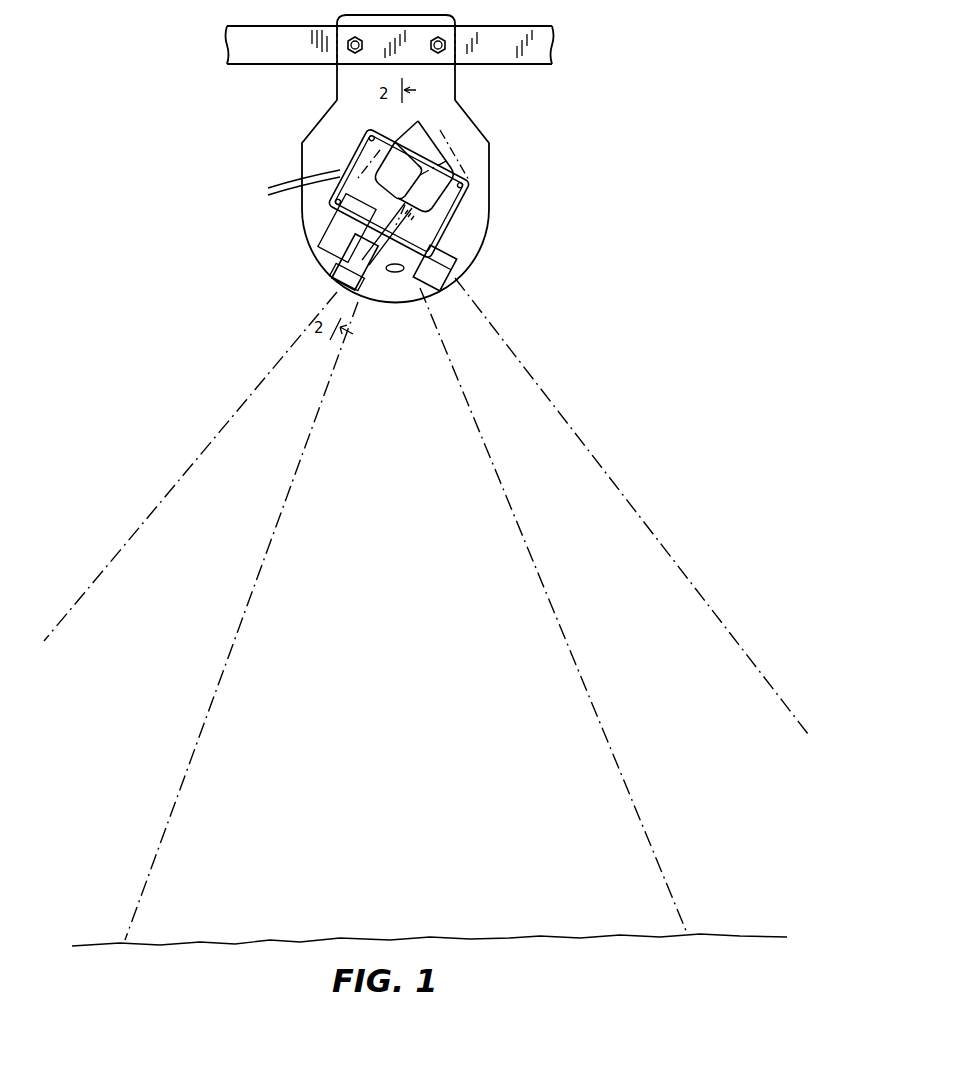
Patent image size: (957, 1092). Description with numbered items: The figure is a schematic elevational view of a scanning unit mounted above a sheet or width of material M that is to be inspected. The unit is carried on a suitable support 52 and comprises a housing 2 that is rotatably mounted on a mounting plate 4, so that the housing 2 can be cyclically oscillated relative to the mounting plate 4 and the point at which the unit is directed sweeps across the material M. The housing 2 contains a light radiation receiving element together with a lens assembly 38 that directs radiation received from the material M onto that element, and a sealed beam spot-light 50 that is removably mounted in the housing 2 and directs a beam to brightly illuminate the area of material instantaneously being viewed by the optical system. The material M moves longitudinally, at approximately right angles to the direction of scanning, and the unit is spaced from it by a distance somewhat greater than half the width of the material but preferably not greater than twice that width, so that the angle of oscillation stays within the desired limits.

The housing 2 is at (462, 208).
The mounting plate 4 is at (475, 124).
The lens assembly 38 is at (336, 265).
The sealed beam spot-light 50 is at (398, 276).
The support 52 is at (530, 66).
The material M is at (190, 943).